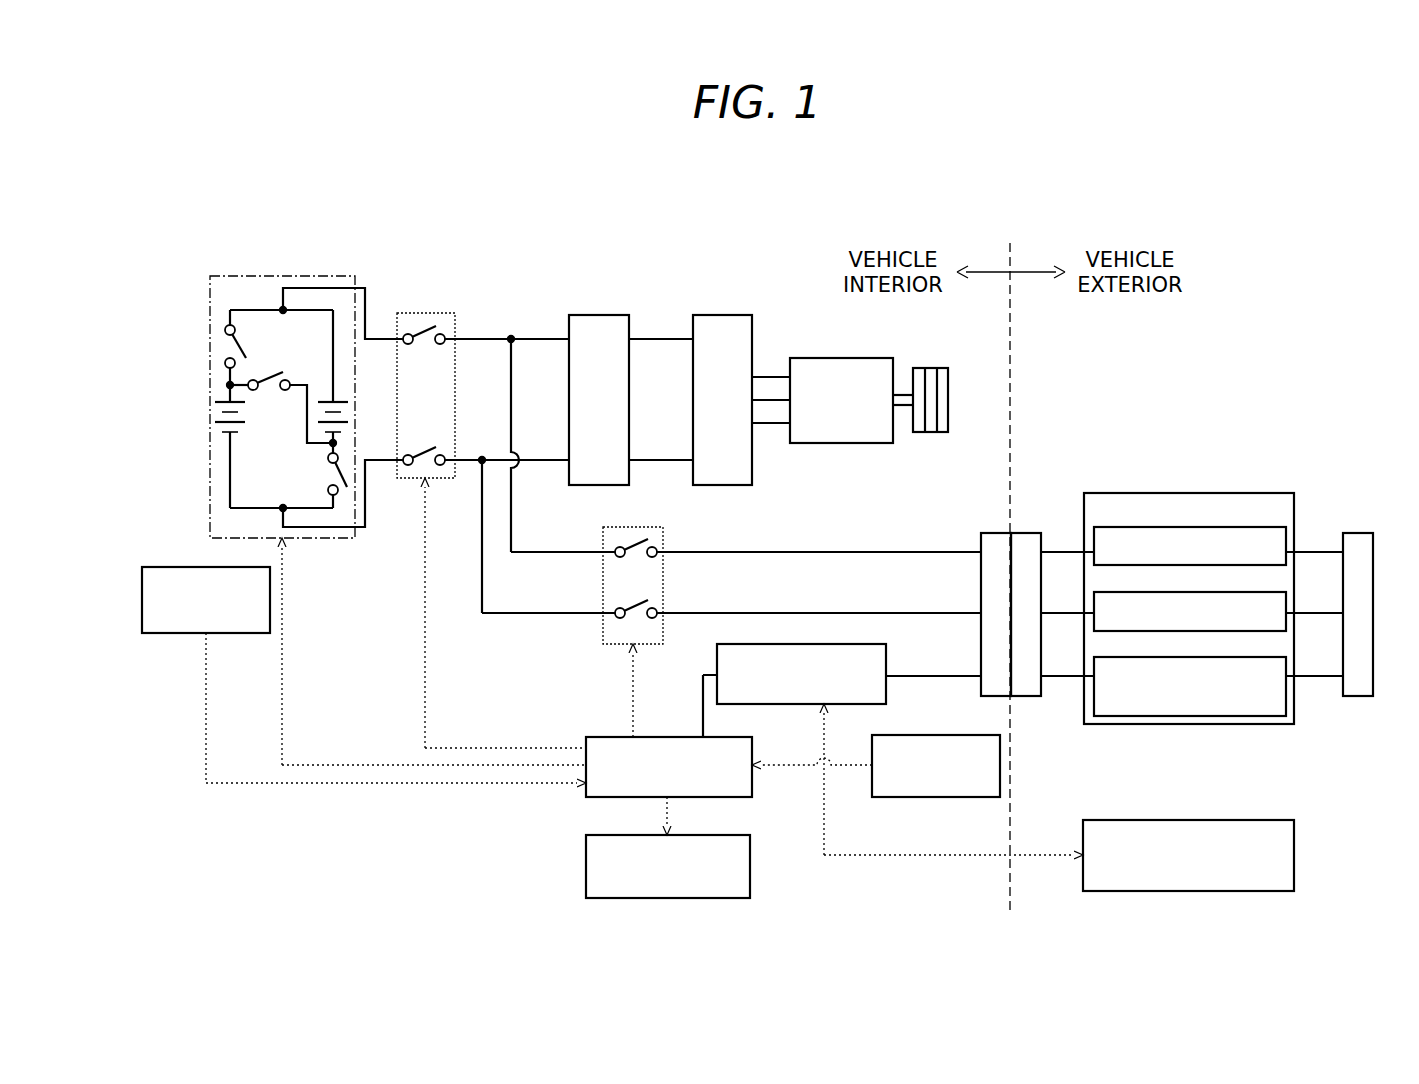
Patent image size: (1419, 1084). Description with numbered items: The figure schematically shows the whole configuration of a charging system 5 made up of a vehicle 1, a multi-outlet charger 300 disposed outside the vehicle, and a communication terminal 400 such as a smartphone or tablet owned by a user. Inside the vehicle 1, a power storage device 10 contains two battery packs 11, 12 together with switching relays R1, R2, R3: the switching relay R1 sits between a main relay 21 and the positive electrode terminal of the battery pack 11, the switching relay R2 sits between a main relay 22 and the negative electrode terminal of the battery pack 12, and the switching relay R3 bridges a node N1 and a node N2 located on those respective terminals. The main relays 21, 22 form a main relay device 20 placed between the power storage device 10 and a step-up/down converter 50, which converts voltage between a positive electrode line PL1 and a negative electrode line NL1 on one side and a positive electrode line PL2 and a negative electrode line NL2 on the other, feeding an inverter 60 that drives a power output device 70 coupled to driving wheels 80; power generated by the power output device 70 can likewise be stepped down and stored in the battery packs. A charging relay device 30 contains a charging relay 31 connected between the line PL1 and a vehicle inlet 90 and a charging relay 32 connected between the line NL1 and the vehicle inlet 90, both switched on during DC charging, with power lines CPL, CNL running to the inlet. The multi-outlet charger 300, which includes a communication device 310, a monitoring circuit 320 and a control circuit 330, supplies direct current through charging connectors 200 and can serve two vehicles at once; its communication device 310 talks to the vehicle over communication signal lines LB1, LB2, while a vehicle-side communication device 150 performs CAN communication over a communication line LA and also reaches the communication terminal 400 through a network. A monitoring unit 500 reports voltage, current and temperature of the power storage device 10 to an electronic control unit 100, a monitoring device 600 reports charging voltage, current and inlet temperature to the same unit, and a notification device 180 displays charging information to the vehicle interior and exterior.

The vehicle 1 is at (372, 201).
The charging system 5 is at (1047, 199).
The power storage device 10 is at (279, 276).
The battery pack 11 is at (222, 398).
The battery pack 12 is at (343, 398).
The switching relay R1 is at (248, 344).
The switching relay R2 is at (325, 478).
The switching relay R3 is at (275, 392).
The node N1 is at (226, 383).
The node N2 is at (336, 440).
The main relay device 20 is at (426, 313).
The main relay 21 is at (426, 347).
The main relay 22 is at (423, 452).
The positive electrode line PL1 is at (475, 332).
The negative electrode line NL1 is at (543, 465).
The positive electrode line PL2 is at (665, 333).
The negative electrode line NL2 is at (668, 465).
The step-up/down converter 50 is at (600, 314).
The inverter 60 is at (720, 314).
The power output device 70 is at (842, 358).
The driving wheels 80 is at (932, 367).
The charging relay device 30 is at (603, 636).
The charging relay 31 is at (638, 558).
The charging relay 32 is at (638, 620).
The power line CPL is at (800, 550).
The power line CNL is at (800, 612).
The communication device 150 is at (850, 642).
The communication line LA is at (933, 654).
The vehicle inlet 90 is at (993, 531).
The charging connector 200 is at (1360, 512).
The communication signal line LB1 is at (1060, 670).
The communication signal line LB2 is at (1315, 670).
The multi-outlet charger 300 is at (1213, 725).
The communication device 310 is at (1222, 653).
The monitoring circuit 320 is at (1222, 522).
The control circuit 330 is at (1222, 588).
The electronic control unit 100 is at (723, 733).
The notification device 180 is at (718, 835).
The monitoring device 600 is at (982, 800).
The communication terminal 400 is at (1217, 820).
The monitoring unit 500 is at (215, 565).